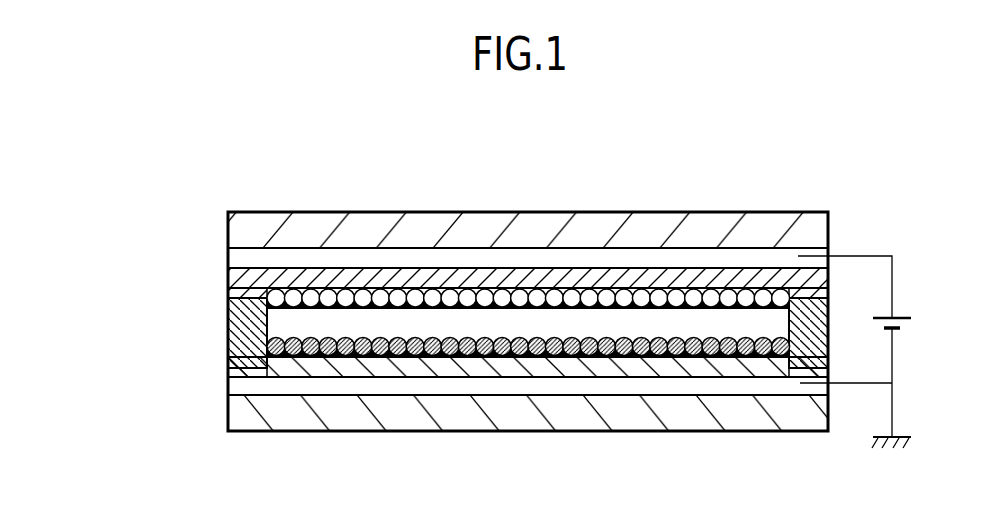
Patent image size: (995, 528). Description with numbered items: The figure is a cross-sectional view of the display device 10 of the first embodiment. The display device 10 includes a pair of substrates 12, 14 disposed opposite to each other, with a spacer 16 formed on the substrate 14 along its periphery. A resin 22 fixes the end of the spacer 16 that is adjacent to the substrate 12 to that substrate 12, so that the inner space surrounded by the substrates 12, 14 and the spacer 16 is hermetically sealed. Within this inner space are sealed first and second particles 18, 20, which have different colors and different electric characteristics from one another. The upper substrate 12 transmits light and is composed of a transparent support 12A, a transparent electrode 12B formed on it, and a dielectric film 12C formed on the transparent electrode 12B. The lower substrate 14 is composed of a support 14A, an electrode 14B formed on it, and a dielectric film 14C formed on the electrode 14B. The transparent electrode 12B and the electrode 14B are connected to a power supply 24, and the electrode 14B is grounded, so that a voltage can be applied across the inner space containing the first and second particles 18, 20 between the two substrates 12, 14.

The display device 10 is at (531, 181).
The substrate 12 is at (469, 254).
The transparent support 12A is at (228, 234).
The transparent electrode 12B is at (228, 262).
The dielectric film 12C is at (489, 282).
The substrate 14 is at (469, 391).
The support 14A is at (489, 414).
The electrode 14B is at (228, 395).
The dielectric film 14C is at (228, 373).
The spacer 16 is at (228, 337).
The first particles 18 is at (330, 297).
The second particles 20 is at (377, 350).
The resin 22 is at (798, 288).
The power supply 24 is at (907, 327).